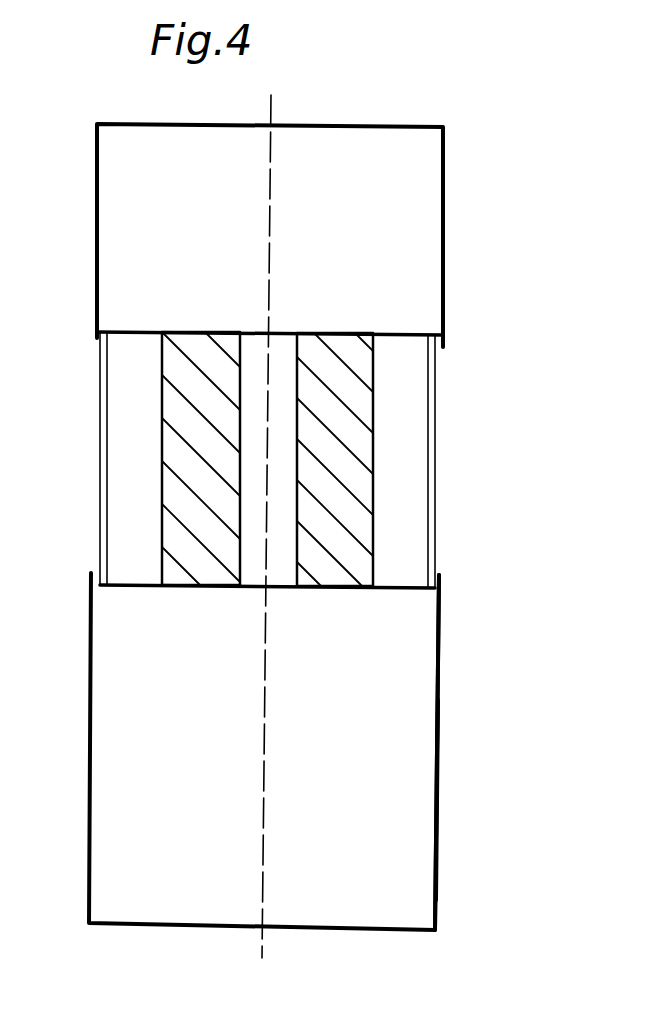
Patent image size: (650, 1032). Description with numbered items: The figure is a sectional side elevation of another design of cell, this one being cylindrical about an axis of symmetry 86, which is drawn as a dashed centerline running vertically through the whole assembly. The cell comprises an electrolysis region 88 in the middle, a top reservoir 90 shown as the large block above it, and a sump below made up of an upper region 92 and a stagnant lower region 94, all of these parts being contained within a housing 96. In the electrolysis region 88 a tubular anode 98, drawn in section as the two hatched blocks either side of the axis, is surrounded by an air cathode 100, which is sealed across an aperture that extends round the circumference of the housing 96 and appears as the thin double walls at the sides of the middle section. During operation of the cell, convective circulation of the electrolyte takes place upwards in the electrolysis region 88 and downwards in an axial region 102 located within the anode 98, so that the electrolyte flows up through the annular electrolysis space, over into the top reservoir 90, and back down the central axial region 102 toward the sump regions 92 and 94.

The axis of symmetry 86 is at (271, 97).
The electrolysis region 88 is at (127, 403).
The top reservoir 90 is at (125, 263).
The upper region of sump 92 is at (127, 665).
The stagnant lower region of sump 94 is at (408, 816).
The housing 96 is at (438, 722).
The tubular anode 98 is at (362, 408).
The air cathode 100 is at (436, 497).
The axial region 102 is at (253, 492).